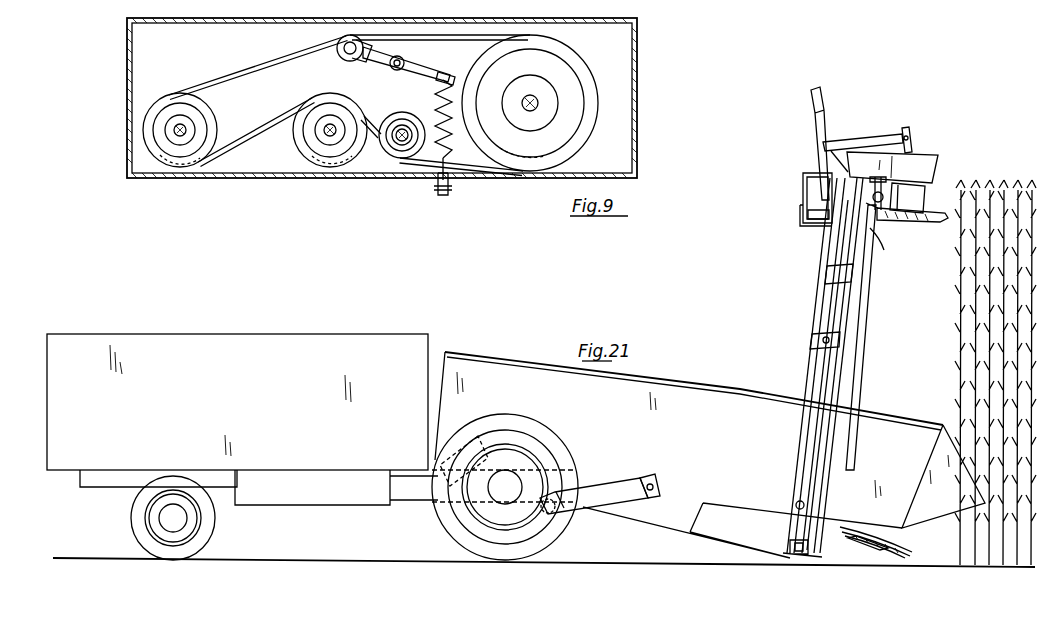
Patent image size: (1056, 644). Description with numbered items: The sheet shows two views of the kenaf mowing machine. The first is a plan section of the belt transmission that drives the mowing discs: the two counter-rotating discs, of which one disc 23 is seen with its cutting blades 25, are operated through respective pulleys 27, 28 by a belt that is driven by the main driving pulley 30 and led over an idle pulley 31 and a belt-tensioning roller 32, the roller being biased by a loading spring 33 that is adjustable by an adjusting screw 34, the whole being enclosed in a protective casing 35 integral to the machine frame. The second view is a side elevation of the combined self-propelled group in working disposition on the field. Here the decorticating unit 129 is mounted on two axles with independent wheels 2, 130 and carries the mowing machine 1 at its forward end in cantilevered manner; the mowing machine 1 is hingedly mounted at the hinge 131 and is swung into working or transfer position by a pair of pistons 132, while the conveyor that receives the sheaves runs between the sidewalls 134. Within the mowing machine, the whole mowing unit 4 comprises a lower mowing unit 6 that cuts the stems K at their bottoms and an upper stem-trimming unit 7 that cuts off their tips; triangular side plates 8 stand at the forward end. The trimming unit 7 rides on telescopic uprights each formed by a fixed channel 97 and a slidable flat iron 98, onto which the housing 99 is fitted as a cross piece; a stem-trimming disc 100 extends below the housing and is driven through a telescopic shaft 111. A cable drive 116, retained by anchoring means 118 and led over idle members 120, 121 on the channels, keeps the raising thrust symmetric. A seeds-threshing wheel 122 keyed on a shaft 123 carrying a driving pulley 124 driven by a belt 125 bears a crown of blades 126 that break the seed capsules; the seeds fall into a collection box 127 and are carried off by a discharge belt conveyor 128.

In FIG. 9, the pulley 27 is at (180, 165).
In FIG. 9, the pulley 28 is at (335, 165).
In FIG. 9, the main driving pulley 30 is at (584, 74).
In FIG. 9, the idle pulley 31 is at (400, 158).
In FIG. 9, the belt-tensioning roller 32 is at (340, 56).
In FIG. 9, the loading spring 33 is at (433, 97).
In FIG. 9, the adjusting screw 34 is at (450, 188).
In FIG. 9, the protective casing 35 is at (637, 106).
In FIG. 21, the protective casing 35 is at (882, 552).
In FIG. 21, the mowing and sheaves-picking machine 1 is at (734, 366).
In FIG. 21, the wheels 2 is at (445, 532).
In FIG. 21, the mowing unit 4 is at (916, 294).
In FIG. 21, the mowing unit 6 is at (918, 555).
In FIG. 21, the stem-trimming unit 7 is at (950, 180).
In FIG. 21, the side plates 8 is at (941, 444).
In FIG. 21, the counter-rotating disc 23 is at (858, 542).
In FIG. 21, the cutting blades 25 is at (838, 530).
In FIG. 21, the channel 97 is at (822, 300).
In FIG. 21, the flat iron 98 is at (828, 266).
In FIG. 21, the housing 99 is at (930, 176).
In FIG. 21, the stem-trimming disc 100 is at (920, 224).
In FIG. 21, the telescopic shaft 111 is at (876, 250).
In FIG. 21, the cable drive 116 is at (812, 428).
In FIG. 21, the anchoring means 118 is at (797, 503).
In FIG. 21, the idle member 120 is at (790, 545).
In FIG. 21, the idle member 121 is at (812, 344).
In FIG. 21, the seeds-threshing wheel 122 is at (814, 118).
In FIG. 21, the shaft 123 is at (840, 141).
In FIG. 21, the driving pulley 124 is at (913, 140).
In FIG. 21, the driving belt 125 is at (905, 130).
In FIG. 21, the blades 126 is at (822, 96).
In FIG. 21, the collection box 127 is at (800, 212).
In FIG. 21, the discharge belt conveyor 128 is at (815, 220).
In FIG. 21, the decorticating unit 129 is at (311, 337).
In FIG. 21, the wheels 130 is at (138, 516).
In FIG. 21, the hinge 131 is at (470, 460).
In FIG. 21, the pistons 132 is at (588, 510).
In FIG. 21, the sidewalls 134 is at (146, 340).
In FIG. 21, the stems K is at (965, 338).